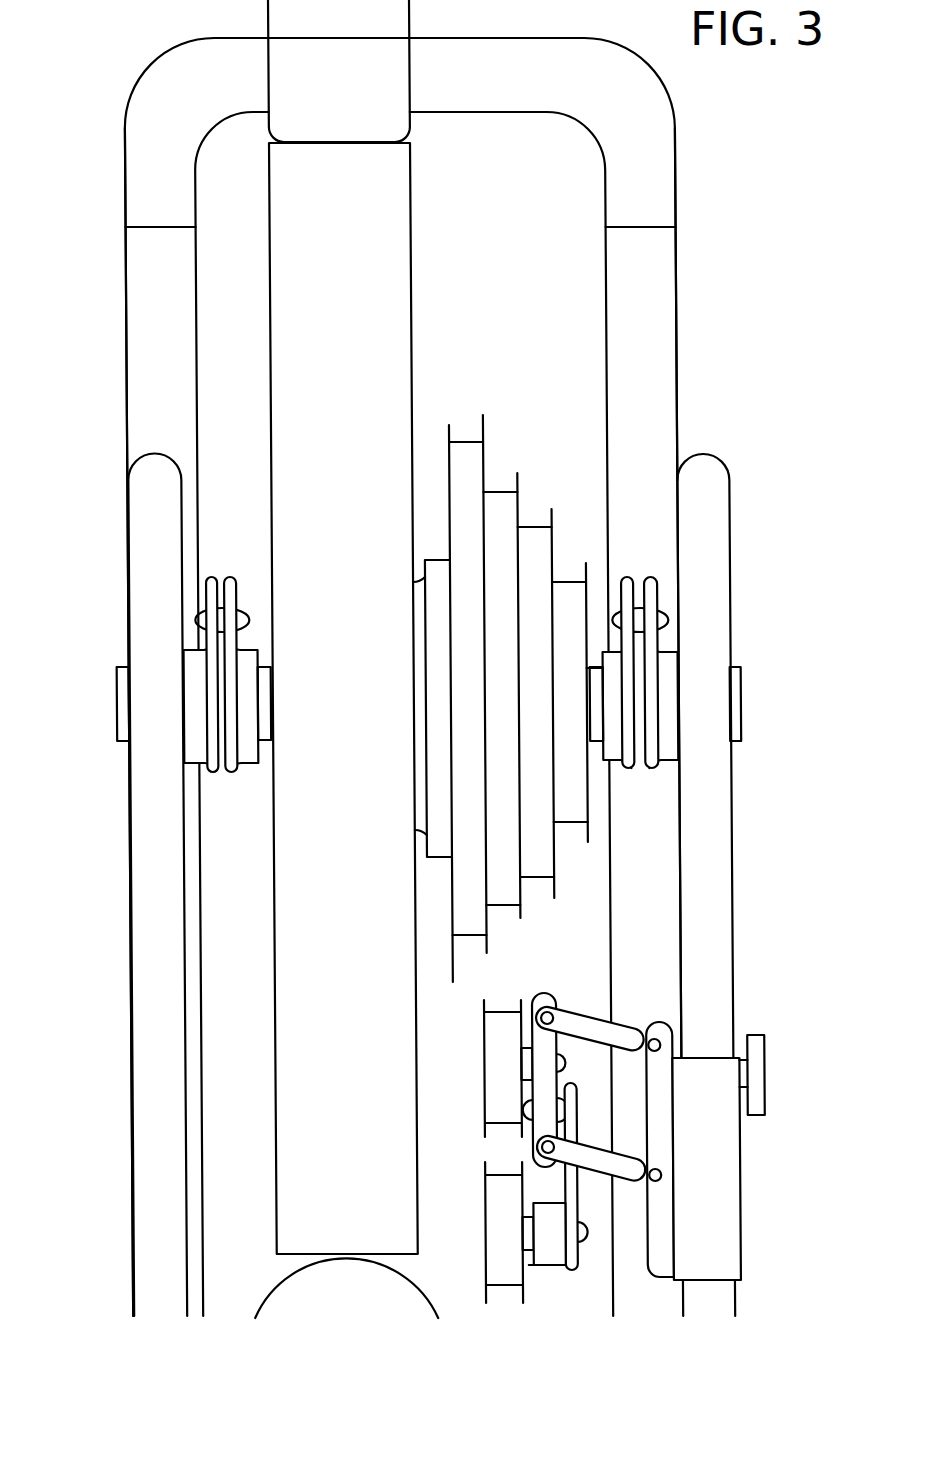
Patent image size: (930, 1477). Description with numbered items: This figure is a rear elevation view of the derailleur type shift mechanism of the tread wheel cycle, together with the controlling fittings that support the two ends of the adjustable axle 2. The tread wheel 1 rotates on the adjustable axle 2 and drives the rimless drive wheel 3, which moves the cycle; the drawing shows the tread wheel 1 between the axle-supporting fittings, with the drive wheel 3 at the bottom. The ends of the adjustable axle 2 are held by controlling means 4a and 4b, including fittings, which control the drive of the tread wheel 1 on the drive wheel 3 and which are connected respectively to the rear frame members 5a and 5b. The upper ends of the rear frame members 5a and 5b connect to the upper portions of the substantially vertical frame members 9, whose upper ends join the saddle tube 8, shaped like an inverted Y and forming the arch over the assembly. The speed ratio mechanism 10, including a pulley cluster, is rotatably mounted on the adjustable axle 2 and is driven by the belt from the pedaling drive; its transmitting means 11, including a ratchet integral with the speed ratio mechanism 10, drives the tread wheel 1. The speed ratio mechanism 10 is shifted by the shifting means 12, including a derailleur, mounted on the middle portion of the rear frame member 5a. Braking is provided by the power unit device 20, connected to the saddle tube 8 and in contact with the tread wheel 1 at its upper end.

The tread wheel 1 is at (418, 236).
The adjustable axle 2 is at (598, 688).
The drive wheel 3 is at (433, 1291).
The controlling means 4a is at (640, 577).
The controlling means 4b is at (226, 577).
The rear frame member 5a is at (733, 548).
The rear frame member 5b is at (122, 548).
The saddle tube 8 is at (683, 158).
The substantially vertical frame members 9 is at (118, 398).
The speed ratio mechanism 10 is at (520, 486).
The transmitting means 11 is at (438, 670).
The shifting means 12 is at (750, 1155).
The power unit device 20 is at (410, 2).